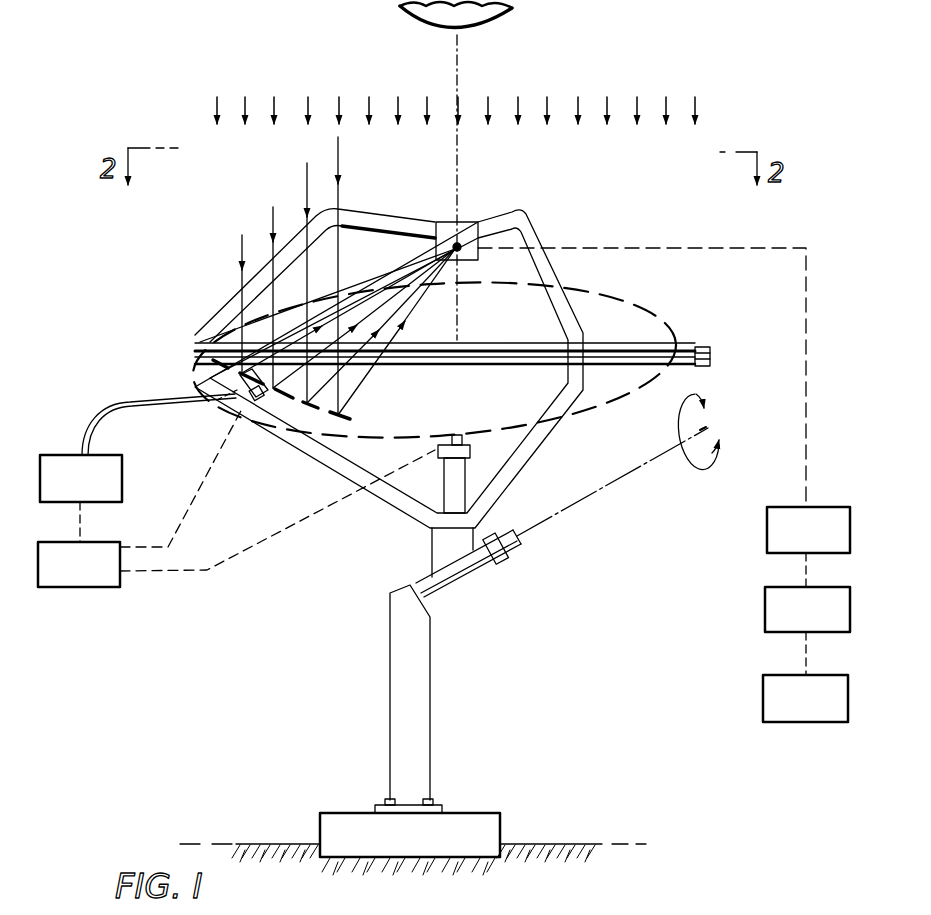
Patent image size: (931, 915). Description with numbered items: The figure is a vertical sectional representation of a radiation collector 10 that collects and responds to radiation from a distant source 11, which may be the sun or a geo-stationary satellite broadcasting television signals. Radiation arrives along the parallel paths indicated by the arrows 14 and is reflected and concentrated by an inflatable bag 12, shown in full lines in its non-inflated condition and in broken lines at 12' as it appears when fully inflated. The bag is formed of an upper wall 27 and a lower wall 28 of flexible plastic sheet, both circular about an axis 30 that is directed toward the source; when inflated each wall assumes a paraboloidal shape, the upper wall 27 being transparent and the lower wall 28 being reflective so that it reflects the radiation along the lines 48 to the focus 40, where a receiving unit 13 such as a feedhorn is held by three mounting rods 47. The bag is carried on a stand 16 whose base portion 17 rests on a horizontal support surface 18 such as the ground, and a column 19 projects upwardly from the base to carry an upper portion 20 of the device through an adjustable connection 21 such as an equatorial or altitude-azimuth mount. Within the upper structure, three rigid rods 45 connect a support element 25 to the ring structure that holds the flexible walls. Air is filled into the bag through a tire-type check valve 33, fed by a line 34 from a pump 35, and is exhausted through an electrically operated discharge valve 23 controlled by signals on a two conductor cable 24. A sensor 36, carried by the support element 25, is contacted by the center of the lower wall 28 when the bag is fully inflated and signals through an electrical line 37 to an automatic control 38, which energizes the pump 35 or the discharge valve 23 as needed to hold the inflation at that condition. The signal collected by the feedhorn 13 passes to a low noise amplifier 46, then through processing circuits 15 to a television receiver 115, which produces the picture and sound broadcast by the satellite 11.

The radiation collector 10 is at (186, 292).
The radiation source 11 is at (499, 14).
The inflatable bag 12 is at (452, 331).
The inflated condition of inflatable bag 12' is at (434, 356).
The receiving unit 13 is at (490, 218).
The rays of energy 14 is at (217, 103).
The processing circuits 15 is at (768, 609).
The stand 16 is at (374, 692).
The base portion 17 is at (482, 820).
The horizontal support surface 18 is at (572, 845).
The column 19 is at (425, 712).
The upper portion 20 is at (318, 470).
The adjustable connection 21 is at (514, 558).
The discharge valve 23 is at (280, 412).
The two conductor cable 24 is at (197, 495).
The support element 25 is at (432, 550).
The upper wall 27 is at (498, 343).
The lower wall 28 is at (510, 340).
The axis 30 is at (458, 193).
The check valve 33 is at (222, 382).
The line 34 is at (140, 408).
The pump 35 is at (54, 455).
The sensor 36 is at (460, 437).
The electrical line 37 is at (297, 521).
The automatic control 38 is at (102, 582).
The focus 40 is at (448, 222).
The rigid rods 45 is at (315, 440).
The low noise amplifier 46 is at (767, 527).
The mounting rods 47 is at (234, 326).
The reflected radiation lines 48 is at (375, 371).
The television receiver 115 is at (765, 696).